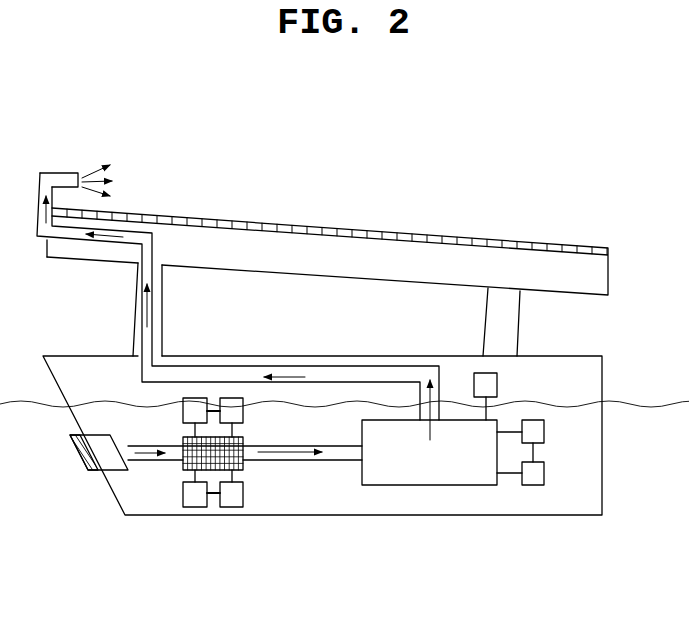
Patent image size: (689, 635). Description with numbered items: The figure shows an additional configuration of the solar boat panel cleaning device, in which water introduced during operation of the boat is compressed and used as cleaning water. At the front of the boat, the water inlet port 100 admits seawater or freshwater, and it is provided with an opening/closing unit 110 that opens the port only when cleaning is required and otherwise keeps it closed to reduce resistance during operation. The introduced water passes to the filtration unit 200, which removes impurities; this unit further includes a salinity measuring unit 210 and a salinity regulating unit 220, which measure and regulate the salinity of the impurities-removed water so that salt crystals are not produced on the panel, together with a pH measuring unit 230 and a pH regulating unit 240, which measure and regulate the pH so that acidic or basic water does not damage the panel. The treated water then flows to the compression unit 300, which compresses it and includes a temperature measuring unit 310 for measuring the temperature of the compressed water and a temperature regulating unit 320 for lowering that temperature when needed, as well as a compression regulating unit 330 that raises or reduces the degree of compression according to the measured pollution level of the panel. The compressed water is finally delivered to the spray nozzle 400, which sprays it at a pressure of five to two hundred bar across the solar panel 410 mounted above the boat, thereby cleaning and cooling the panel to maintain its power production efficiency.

The water inlet port 100 is at (108, 458).
The opening/closing unit 110 is at (77, 456).
The filtration unit 200 is at (238, 462).
The salinity measuring unit 210 is at (197, 398).
The salinity regulating unit 220 is at (242, 398).
The pH measuring unit 230 is at (193, 498).
The pH regulating unit 240 is at (230, 498).
The compression unit 300 is at (397, 472).
The temperature measuring unit 310 is at (544, 431).
The temperature regulating unit 320 is at (544, 471).
The compression regulating unit 330 is at (497, 383).
The spray nozzle 400 is at (68, 173).
The solar panel 410 is at (577, 245).